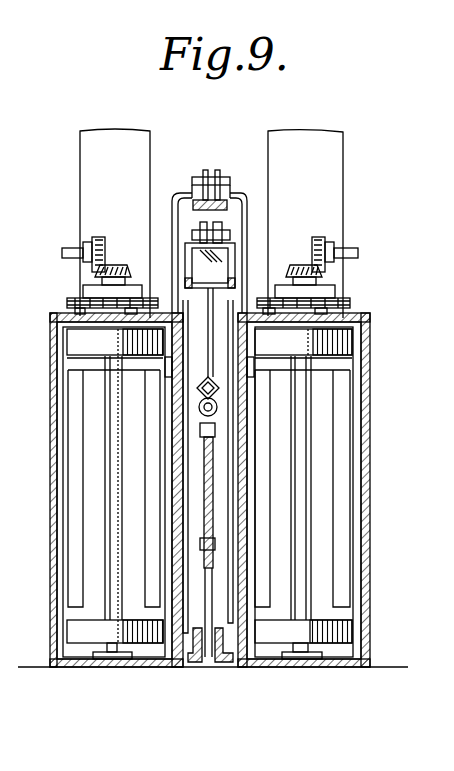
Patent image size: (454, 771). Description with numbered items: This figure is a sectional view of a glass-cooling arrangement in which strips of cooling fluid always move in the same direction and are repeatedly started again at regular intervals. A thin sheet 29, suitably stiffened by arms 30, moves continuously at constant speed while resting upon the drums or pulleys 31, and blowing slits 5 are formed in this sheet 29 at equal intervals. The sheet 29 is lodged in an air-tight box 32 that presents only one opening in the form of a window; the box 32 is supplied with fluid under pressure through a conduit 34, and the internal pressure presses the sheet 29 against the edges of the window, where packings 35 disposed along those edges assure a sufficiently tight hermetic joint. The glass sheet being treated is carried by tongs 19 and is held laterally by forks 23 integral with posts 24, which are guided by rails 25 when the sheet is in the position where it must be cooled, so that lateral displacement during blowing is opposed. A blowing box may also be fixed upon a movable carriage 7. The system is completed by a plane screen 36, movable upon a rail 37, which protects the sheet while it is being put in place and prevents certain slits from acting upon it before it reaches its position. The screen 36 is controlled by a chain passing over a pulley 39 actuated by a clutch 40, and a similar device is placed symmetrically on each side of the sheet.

The blowing slit 5 is at (153, 397).
The movable carriage 7 is at (210, 513).
The tongs 19 is at (220, 395).
The fork 23 is at (215, 543).
The post 24 is at (213, 620).
The rail 25 is at (196, 642).
The thin sheet 29 is at (63, 358).
The arm 30 is at (147, 491).
The drum 31 is at (73, 343).
The air-tight box 32 is at (50, 551).
The conduit 34 is at (84, 194).
The packing 35 is at (160, 371).
The plane screen 36 is at (185, 437).
The rail 37 is at (213, 203).
The pulley 39 is at (75, 300).
The clutch 40 is at (93, 290).